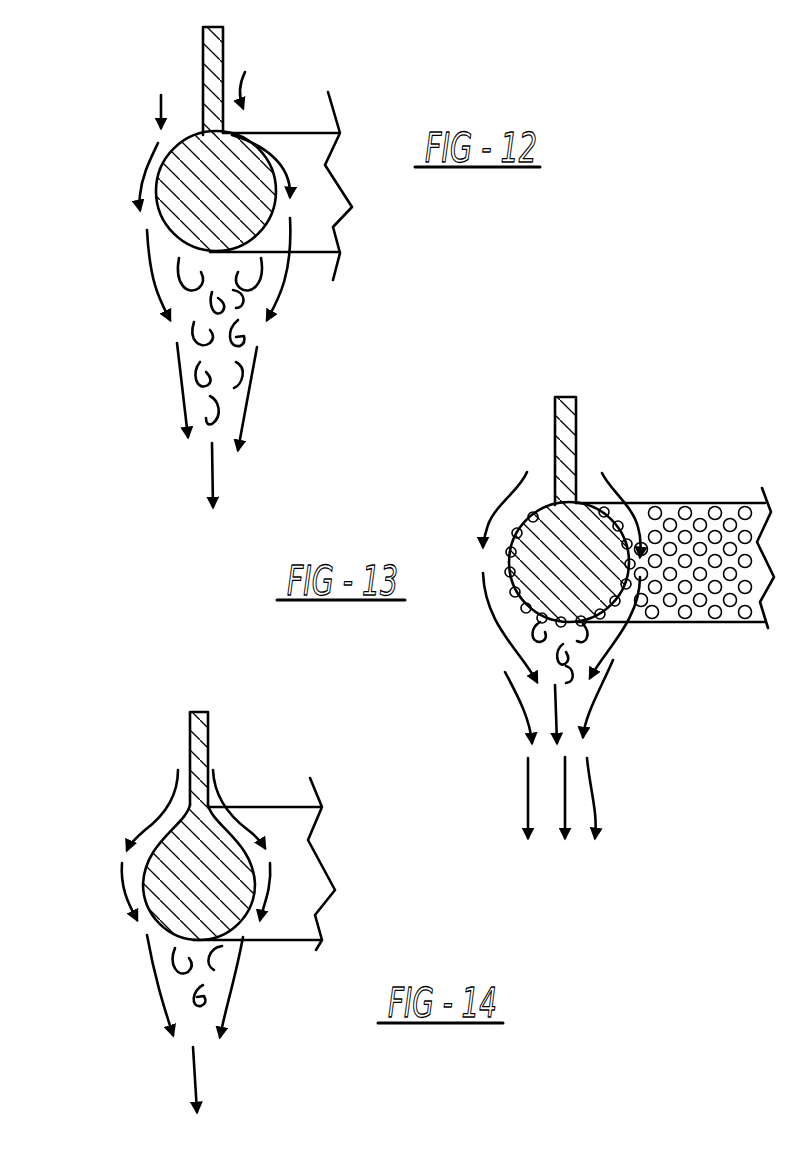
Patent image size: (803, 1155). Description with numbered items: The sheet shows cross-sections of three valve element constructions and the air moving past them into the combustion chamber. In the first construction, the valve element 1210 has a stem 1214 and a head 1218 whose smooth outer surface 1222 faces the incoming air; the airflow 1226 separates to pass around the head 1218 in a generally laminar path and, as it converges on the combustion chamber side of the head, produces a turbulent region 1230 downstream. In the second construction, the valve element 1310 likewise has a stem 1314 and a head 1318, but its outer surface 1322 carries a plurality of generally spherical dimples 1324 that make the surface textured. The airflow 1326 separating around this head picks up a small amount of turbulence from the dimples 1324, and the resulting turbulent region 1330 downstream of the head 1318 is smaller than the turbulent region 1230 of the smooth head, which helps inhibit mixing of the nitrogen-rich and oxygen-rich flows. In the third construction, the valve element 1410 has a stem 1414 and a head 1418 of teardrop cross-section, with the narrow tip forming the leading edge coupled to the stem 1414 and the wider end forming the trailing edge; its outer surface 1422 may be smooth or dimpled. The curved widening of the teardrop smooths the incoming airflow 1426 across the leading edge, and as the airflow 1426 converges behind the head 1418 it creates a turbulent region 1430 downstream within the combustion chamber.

In FIG. 12, the valve element 1210 is at (135, 128).
In FIG. 12, the stem 1214 is at (203, 50).
In FIG. 12, the head 1218 is at (172, 178).
In FIG. 12, the smooth outer surface 1222 is at (299, 152).
In FIG. 12, the airflow 1226 is at (150, 302).
In FIG. 12, the turbulent region 1230 is at (238, 339).
In FIG. 13, the valve element 1310 is at (490, 498).
In FIG. 13, the stem 1314 is at (555, 418).
In FIG. 13, the head 1318 is at (525, 548).
In FIG. 13, the outer surface 1322 is at (702, 506).
In FIG. 13, the dimples 1324 is at (732, 627).
In FIG. 13, the airflow 1326 is at (500, 650).
In FIG. 13, the turbulent region 1330 is at (597, 643).
In FIG. 14, the valve element 1410 is at (120, 813).
In FIG. 14, the stem 1414 is at (190, 729).
In FIG. 14, the head 1418 is at (157, 877).
In FIG. 14, the outer surface 1422 is at (296, 843).
In FIG. 14, the airflow 1426 is at (137, 988).
In FIG. 14, the turbulent region 1430 is at (200, 1000).